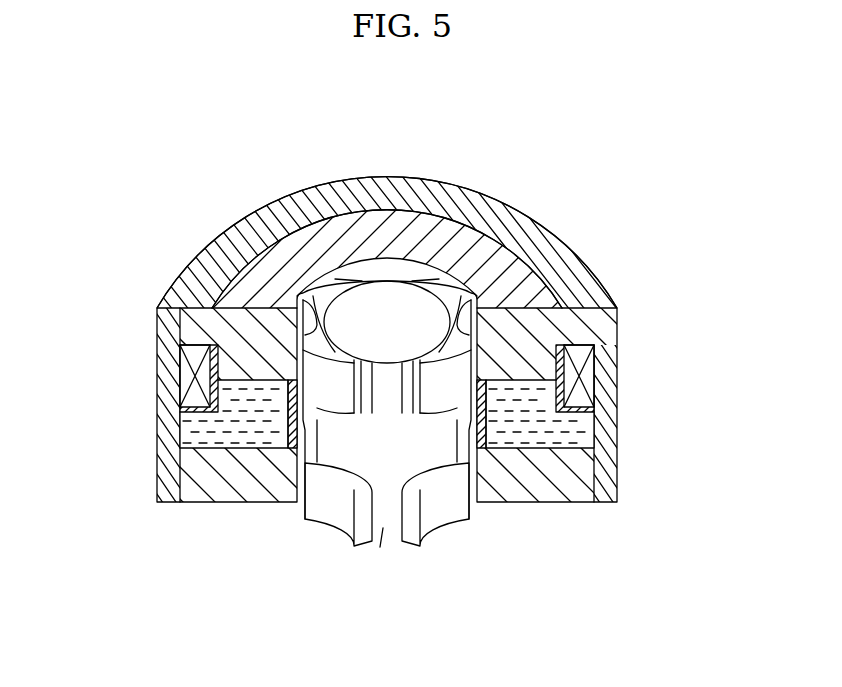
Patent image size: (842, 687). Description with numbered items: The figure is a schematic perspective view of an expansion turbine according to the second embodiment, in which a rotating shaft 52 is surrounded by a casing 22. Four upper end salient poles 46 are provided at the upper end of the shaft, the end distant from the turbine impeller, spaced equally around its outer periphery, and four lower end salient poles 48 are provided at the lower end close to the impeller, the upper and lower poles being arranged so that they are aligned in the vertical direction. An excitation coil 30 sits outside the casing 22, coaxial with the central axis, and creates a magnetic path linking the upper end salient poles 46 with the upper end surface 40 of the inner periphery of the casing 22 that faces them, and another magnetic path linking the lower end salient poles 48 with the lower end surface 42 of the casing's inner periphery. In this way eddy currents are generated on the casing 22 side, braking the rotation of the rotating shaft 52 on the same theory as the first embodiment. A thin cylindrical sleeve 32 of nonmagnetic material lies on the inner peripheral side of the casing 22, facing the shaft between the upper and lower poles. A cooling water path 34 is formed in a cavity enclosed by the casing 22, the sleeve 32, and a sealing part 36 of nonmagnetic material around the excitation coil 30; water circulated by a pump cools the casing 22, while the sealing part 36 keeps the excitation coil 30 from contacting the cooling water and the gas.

The casing 22 is at (533, 287).
The excitation coil 30 is at (183, 367).
The sleeve 32 is at (292, 428).
The cooling water path 34 is at (190, 430).
The sealing part 36 is at (196, 402).
The upper end surface of the inner periphery of the casing 40 is at (220, 237).
The lower end surface of the inner periphery of the casing 42 is at (305, 505).
The upper end salient poles 46 is at (303, 296).
The lower end salient poles 48 is at (305, 462).
The rotating shaft 52 is at (383, 528).